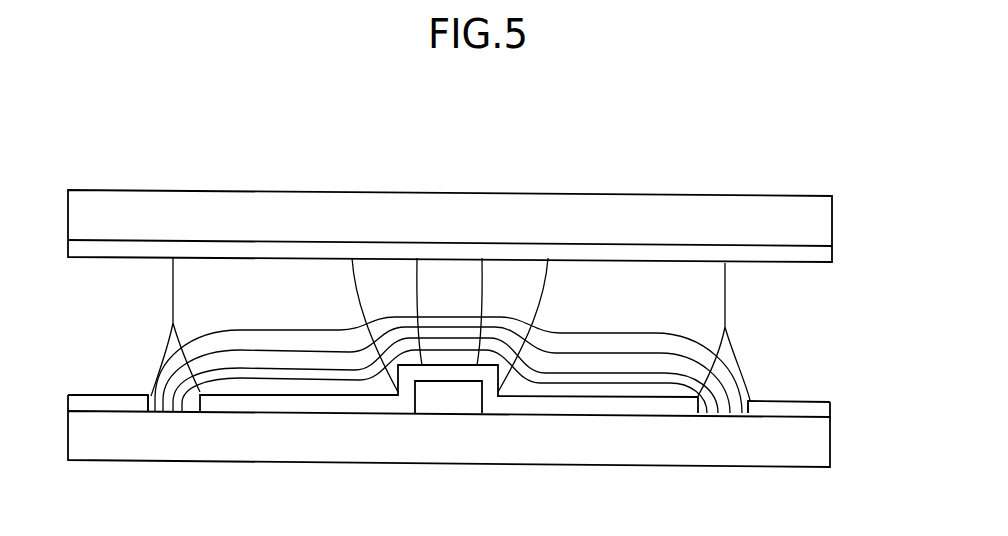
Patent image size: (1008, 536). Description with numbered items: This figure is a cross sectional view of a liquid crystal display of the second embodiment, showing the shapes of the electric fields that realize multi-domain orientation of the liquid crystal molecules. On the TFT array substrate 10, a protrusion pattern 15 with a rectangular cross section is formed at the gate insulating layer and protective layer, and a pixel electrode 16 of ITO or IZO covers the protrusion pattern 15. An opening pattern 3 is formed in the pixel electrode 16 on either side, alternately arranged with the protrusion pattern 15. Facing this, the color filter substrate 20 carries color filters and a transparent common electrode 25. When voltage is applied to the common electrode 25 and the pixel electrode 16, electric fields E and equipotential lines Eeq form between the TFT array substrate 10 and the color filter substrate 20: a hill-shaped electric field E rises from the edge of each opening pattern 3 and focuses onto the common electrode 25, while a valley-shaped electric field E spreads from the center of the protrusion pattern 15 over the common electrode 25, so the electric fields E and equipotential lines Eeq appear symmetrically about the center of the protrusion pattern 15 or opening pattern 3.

The color filter substrate 20 is at (817, 221).
The common electrode 25 is at (817, 259).
The TFT array substrate 10 is at (822, 442).
The pixel electrode 16 is at (822, 409).
The protrusion pattern 15 is at (448, 403).
The opening pattern 3 is at (145, 393).
The electric field E is at (548, 280).
The equipotential lines Eeq is at (627, 333).